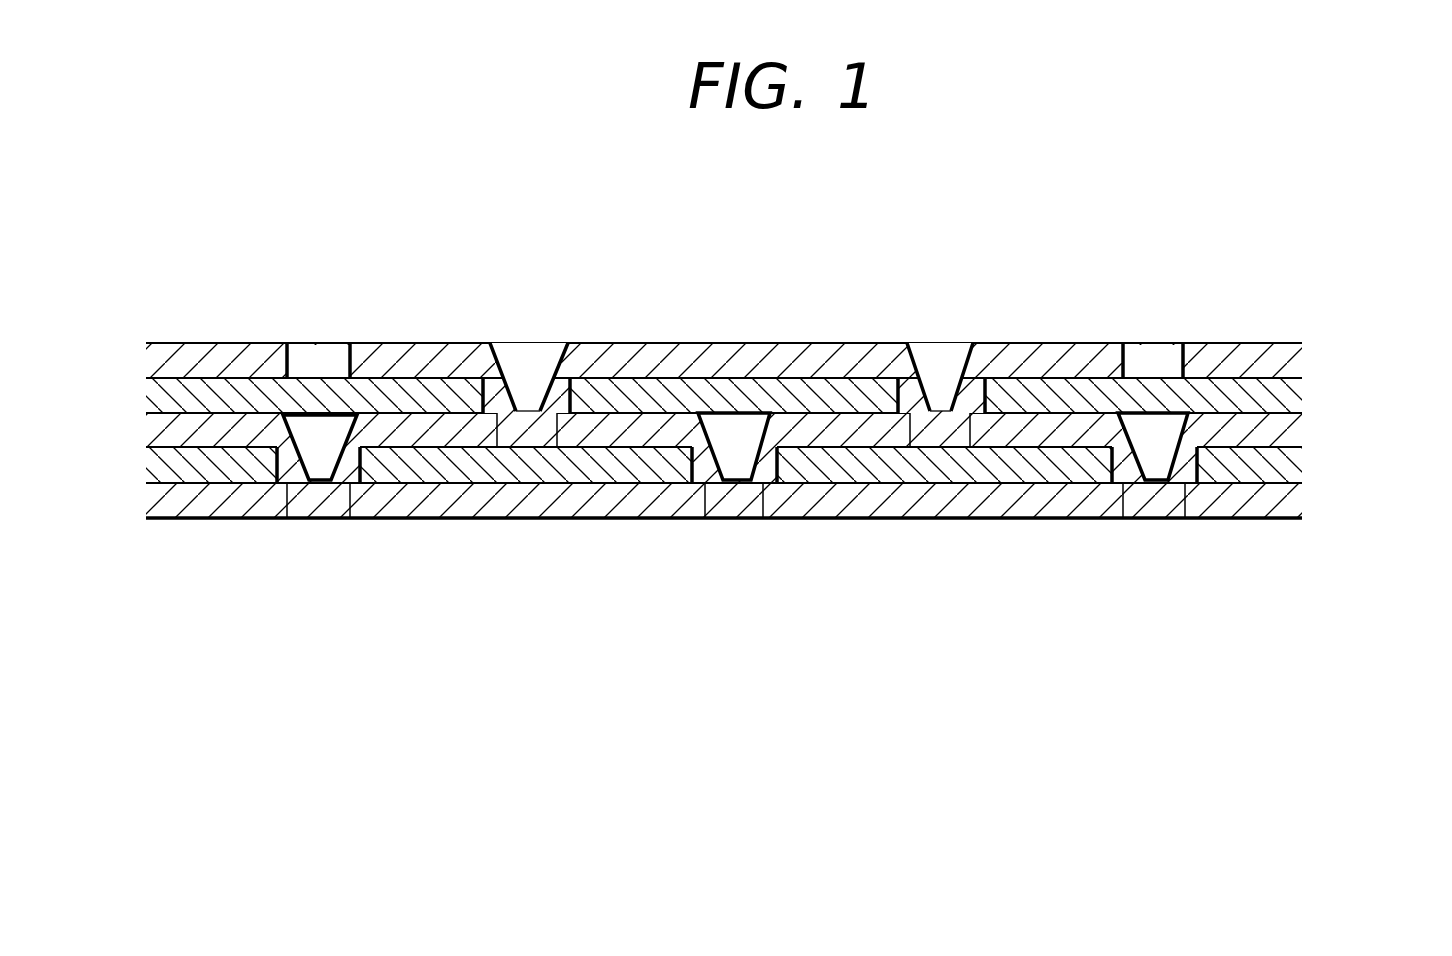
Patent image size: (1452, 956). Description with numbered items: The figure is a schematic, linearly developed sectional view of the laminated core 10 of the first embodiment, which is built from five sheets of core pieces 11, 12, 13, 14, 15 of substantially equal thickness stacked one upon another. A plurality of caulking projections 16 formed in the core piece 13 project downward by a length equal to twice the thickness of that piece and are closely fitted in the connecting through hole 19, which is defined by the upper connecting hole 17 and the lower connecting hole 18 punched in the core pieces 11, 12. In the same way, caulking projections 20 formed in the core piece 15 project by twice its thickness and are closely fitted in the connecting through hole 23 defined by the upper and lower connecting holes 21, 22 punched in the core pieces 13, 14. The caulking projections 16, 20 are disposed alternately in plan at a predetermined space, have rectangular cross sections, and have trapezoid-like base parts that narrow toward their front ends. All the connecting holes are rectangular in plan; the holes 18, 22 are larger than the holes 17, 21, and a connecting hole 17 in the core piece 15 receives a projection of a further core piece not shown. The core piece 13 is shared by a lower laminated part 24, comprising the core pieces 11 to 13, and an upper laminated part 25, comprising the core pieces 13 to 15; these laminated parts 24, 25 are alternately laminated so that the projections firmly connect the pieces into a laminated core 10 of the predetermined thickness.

The laminated core 10 is at (1149, 208).
The core piece 11 is at (1288, 503).
The core piece 12 is at (1288, 460).
The core piece 13 is at (1278, 428).
The core piece 14 is at (1288, 392).
The core piece 15 is at (1272, 343).
The caulking projection 16 is at (318, 513).
The connecting hole 17 is at (338, 356).
The connecting hole 18 is at (718, 452).
The connecting through hole 19 is at (780, 263).
The caulking projection 20 is at (533, 440).
The connecting hole 21 is at (521, 388).
The connecting hole 22 is at (550, 388).
The connecting through hole 23 is at (455, 263).
The lower laminated part 24 is at (1402, 438).
The upper laminated part 25 is at (1402, 297).